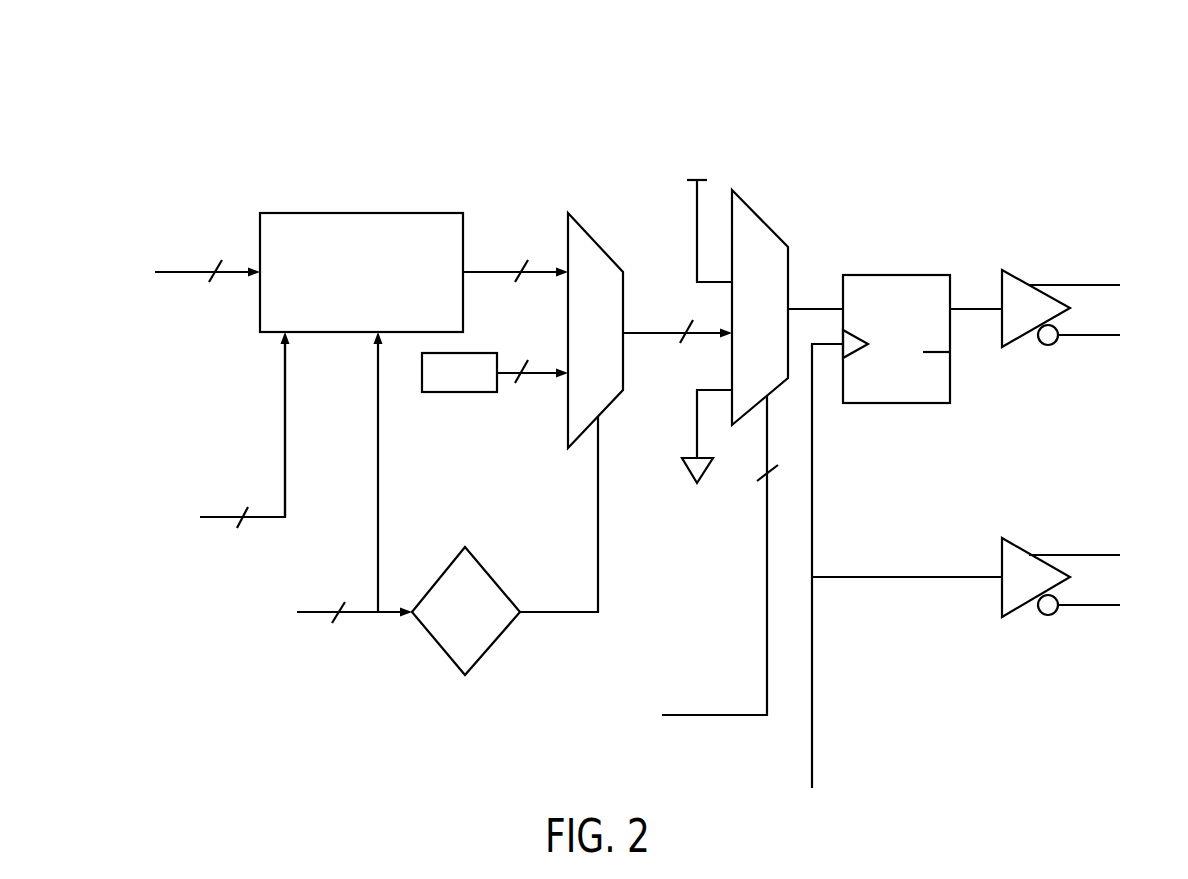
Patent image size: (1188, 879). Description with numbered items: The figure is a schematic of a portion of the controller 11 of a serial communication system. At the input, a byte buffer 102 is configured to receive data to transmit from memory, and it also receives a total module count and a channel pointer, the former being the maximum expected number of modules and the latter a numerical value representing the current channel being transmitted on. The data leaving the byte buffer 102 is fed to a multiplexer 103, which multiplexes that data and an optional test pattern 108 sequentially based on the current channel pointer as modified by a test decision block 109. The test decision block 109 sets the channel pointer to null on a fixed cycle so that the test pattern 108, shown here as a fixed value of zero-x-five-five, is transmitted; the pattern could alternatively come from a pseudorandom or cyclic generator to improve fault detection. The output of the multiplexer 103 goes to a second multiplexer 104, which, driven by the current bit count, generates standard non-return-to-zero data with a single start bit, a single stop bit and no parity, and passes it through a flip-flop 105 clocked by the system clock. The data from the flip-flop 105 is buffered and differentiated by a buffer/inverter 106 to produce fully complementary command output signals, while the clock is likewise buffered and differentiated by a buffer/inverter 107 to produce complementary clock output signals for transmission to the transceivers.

The controller 11 is at (1091, 79).
The byte buffer 102 is at (357, 212).
The multiplexer 103 is at (607, 248).
The second multiplexer 104 is at (773, 228).
The flip-flop 105 is at (920, 275).
The buffer/inverter 106 is at (1025, 282).
The buffer/inverter 107 is at (1022, 548).
The test pattern 108 is at (478, 352).
The test decision block 109 is at (490, 578).